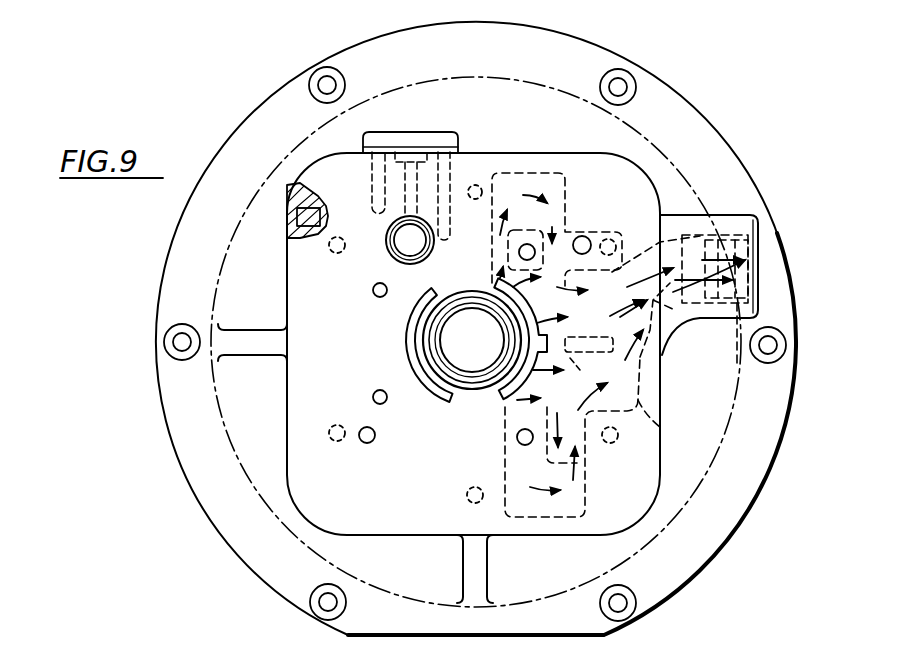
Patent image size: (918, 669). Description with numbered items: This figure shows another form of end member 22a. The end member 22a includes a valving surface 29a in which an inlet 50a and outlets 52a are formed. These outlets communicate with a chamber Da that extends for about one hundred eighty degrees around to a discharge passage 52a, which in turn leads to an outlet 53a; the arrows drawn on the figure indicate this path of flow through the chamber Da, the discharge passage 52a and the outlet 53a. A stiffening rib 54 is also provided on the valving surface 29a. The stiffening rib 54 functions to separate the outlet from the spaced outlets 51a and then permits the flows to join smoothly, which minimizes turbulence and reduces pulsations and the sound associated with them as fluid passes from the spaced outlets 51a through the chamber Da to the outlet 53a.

The end member 22a is at (730, 181).
The valving surface 29a is at (355, 522).
The inlet 50a is at (437, 402).
The spaced outlets 51a is at (538, 313).
The discharge passage 52a is at (684, 338).
The outlet 53a is at (752, 262).
The stiffening rib 54 is at (608, 343).
The chamber Da is at (658, 428).